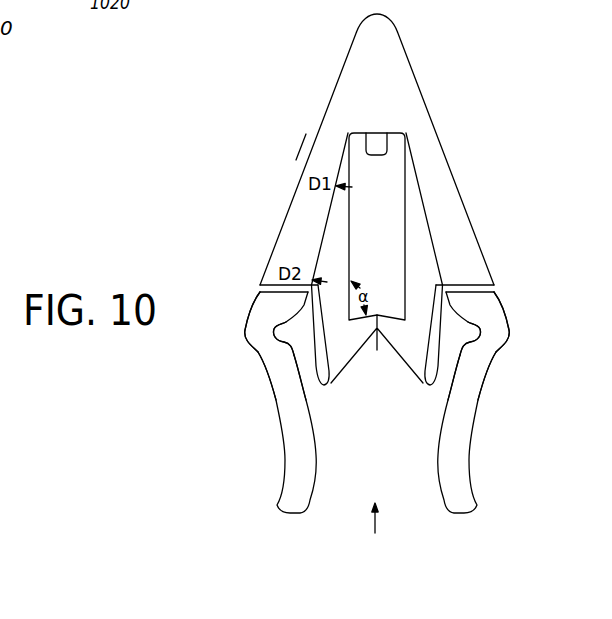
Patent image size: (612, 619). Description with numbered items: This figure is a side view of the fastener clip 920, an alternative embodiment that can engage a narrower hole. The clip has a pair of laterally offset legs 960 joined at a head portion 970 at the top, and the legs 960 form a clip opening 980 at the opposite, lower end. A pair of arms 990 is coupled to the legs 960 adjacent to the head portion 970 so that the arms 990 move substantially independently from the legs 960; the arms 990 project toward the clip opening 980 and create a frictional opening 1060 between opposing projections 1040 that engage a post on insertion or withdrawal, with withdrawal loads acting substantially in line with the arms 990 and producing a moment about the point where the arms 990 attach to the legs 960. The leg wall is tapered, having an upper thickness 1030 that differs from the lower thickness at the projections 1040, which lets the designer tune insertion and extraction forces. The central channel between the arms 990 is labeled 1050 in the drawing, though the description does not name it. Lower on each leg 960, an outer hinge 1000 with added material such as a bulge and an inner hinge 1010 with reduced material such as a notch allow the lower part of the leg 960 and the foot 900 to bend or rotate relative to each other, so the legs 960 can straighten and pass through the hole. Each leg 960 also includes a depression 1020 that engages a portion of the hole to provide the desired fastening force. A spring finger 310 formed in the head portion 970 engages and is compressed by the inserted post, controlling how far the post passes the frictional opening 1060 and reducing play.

The foot 900 is at (282, 477).
The fastener clip 920 is at (300, 55).
The head portion 970 is at (420, 37).
The upper leg thickness 1030 is at (292, 176).
The legs 960 is at (302, 228).
The spring finger 310 is at (378, 149).
The central channel 1050 is at (375, 295).
The frictional opening 1060 is at (377, 349).
The arms 990 is at (325, 337).
The projections 1040 is at (257, 268).
The inner hinge 1010 is at (280, 322).
The outer hinge 1000 is at (245, 339).
The depression 1020 is at (492, 365).
The clip opening 980 is at (375, 535).